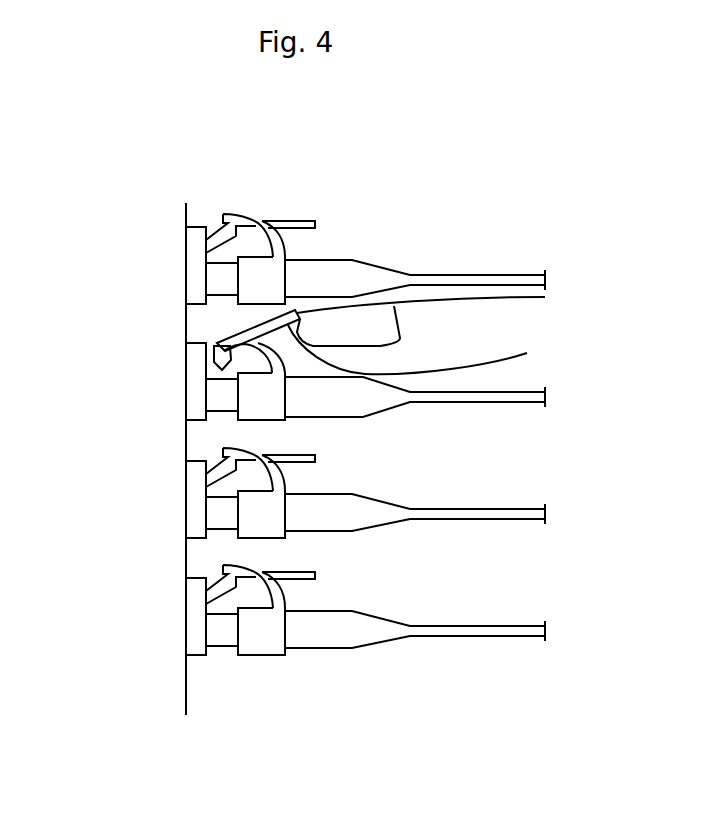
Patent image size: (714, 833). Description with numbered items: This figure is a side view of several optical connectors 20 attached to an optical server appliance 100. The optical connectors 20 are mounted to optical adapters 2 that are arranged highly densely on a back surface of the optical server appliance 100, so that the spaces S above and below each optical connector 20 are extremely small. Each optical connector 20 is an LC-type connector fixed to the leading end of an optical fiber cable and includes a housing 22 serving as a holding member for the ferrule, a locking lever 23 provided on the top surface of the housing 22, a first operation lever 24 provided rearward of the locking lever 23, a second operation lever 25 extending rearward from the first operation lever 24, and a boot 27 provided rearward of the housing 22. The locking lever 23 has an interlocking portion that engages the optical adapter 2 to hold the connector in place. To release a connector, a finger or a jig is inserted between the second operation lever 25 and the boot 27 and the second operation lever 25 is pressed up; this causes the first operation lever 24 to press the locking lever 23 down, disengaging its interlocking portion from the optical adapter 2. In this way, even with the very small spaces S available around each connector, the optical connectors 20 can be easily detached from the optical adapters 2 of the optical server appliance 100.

The optical server appliance 100 is at (146, 194).
The optical adapter 2 is at (185, 263).
The space S is at (209, 312).
The optical connector 20 is at (372, 250).
The housing 22 is at (222, 396).
The locking lever 23 is at (210, 363).
The first operation lever 24 is at (224, 345).
The second operation lever 25 is at (297, 312).
The boot 27 is at (372, 400).